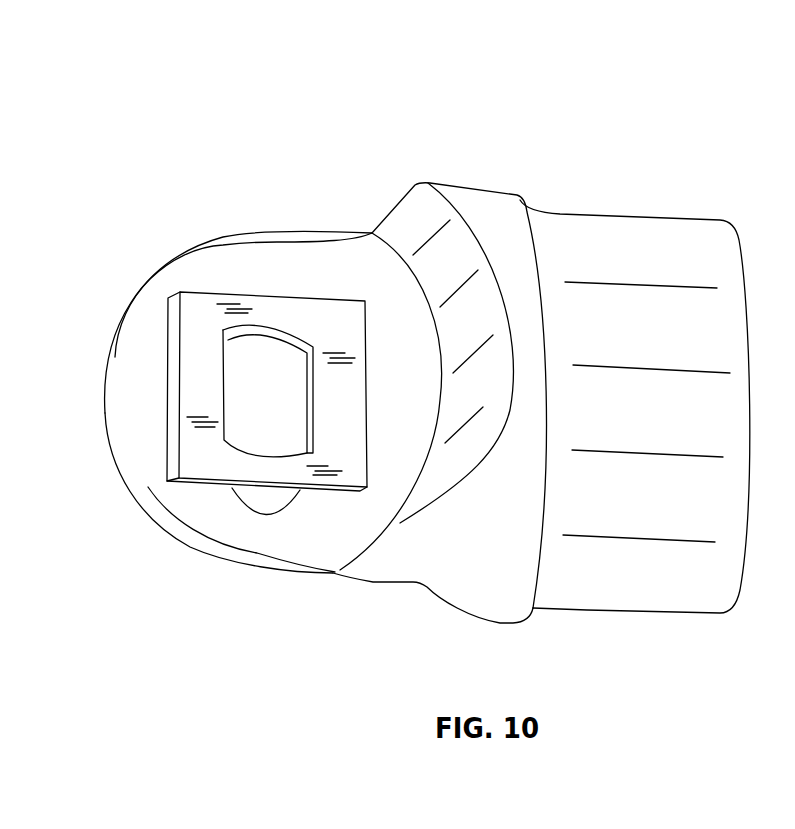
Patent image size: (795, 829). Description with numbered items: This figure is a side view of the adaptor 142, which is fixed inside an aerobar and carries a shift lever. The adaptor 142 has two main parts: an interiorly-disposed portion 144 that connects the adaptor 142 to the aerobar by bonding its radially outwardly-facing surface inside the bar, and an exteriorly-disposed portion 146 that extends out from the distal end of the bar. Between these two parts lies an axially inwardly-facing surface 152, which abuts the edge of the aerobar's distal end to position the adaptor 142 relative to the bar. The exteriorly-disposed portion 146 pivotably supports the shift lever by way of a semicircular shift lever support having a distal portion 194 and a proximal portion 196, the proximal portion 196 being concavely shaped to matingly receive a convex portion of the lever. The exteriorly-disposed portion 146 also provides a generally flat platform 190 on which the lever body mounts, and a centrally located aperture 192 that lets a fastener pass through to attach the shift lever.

The adaptor 142 is at (450, 373).
The interiorly-disposed portion 144 is at (678, 190).
The exteriorly-disposed portion 146 is at (326, 393).
The axially inwardly-facing surface 152 is at (540, 577).
The flat platform 190 is at (193, 463).
The aperture 192 is at (268, 413).
The distal portion 194 is at (213, 265).
The proximal portion 196 is at (468, 257).